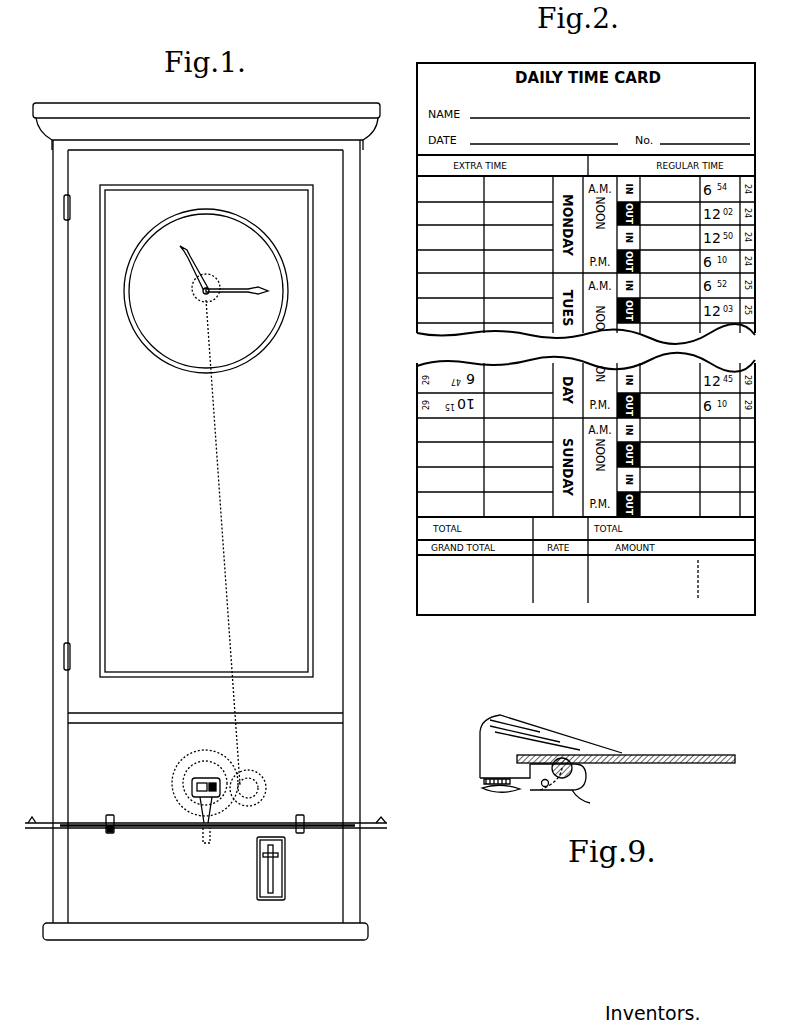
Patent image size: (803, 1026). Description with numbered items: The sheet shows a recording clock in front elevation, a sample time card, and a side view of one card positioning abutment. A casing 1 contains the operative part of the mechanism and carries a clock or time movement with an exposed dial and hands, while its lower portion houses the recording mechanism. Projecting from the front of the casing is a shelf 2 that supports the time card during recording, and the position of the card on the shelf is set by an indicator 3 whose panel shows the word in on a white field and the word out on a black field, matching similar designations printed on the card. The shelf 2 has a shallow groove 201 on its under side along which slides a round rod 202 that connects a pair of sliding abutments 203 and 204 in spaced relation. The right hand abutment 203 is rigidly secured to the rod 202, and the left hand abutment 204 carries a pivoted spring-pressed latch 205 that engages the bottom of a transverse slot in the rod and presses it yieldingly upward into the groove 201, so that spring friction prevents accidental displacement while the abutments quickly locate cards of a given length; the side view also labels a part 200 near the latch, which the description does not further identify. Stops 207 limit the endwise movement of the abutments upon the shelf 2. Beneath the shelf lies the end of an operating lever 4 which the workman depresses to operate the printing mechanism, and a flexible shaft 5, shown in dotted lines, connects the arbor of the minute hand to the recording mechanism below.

In FIG. 1, the casing 1 is at (335, 482).
In FIG. 1, the shelf 2 is at (385, 823).
In FIG. 9, the shelf 2 is at (675, 755).
In FIG. 1, the indicator 3 is at (196, 797).
In FIG. 1, the operating lever 4 is at (280, 862).
In FIG. 1, the flexible shaft 5 is at (223, 513).
In FIG. 9, the spring 200 is at (484, 797).
In FIG. 9, the shallow groove 201 is at (566, 760).
In FIG. 1, the round rod 202 is at (136, 832).
In FIG. 9, the round rod 202 is at (580, 768).
In FIG. 1, the right hand abutment 203 is at (306, 805).
In FIG. 1, the left hand abutment 204 is at (109, 815).
In FIG. 9, the left hand abutment 204 is at (488, 754).
In FIG. 9, the latch 205 is at (597, 803).
In FIG. 1, the stops 207 is at (398, 820).